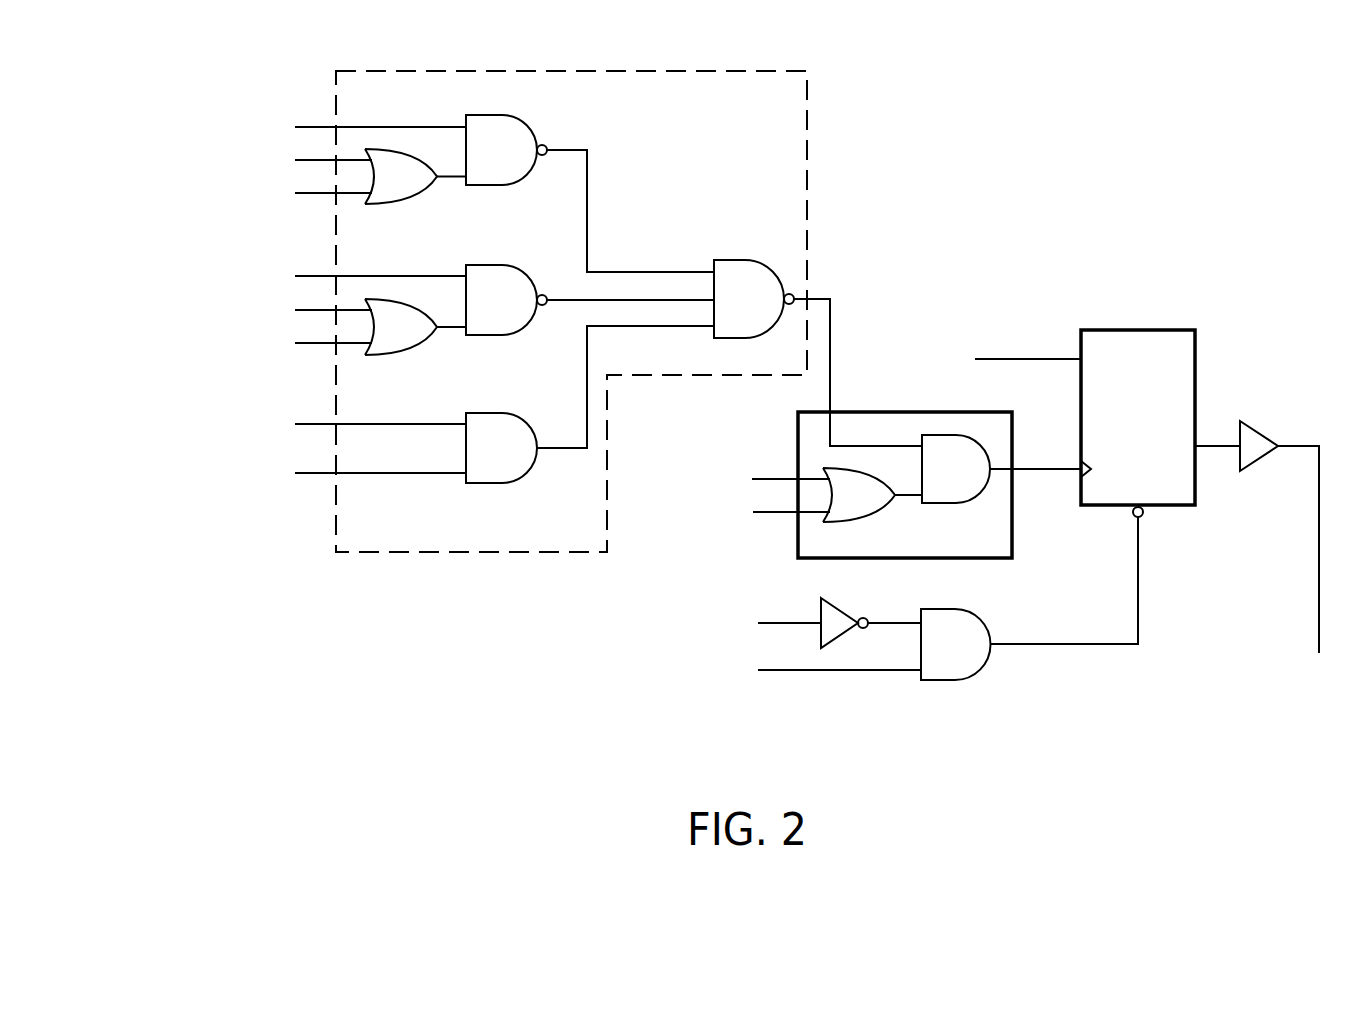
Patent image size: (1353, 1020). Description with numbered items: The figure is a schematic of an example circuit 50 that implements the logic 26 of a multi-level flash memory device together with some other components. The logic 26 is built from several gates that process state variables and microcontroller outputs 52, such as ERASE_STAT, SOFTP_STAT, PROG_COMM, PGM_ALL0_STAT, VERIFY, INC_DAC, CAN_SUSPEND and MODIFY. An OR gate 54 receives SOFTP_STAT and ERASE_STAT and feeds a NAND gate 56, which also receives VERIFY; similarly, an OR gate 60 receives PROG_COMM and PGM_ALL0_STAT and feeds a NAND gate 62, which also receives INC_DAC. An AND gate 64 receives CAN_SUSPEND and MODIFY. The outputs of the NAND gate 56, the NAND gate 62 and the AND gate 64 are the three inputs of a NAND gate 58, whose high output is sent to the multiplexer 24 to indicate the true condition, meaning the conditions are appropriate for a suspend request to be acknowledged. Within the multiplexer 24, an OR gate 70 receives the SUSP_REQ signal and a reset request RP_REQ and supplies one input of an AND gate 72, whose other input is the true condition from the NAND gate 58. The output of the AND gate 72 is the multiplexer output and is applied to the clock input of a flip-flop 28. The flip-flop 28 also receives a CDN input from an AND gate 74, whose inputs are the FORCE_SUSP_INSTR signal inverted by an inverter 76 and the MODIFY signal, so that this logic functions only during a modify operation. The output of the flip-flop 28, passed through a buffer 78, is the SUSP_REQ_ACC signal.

The multiplexer 24 is at (853, 412).
The logic 26 is at (808, 112).
The flip-flop 28 is at (1137, 330).
The circuit 50 is at (1160, 104).
The state variables and microcontroller outputs 52 is at (215, 95).
The OR gate 54 is at (407, 195).
The NAND gate 56 is at (510, 127).
The 3-input NAND gate 58 is at (743, 265).
The OR gate 60 is at (403, 345).
The NAND gate 62 is at (493, 270).
The AND gate 64 is at (510, 417).
The OR gate 70 is at (867, 513).
The AND gate 72 is at (948, 497).
The AND gate 74 is at (943, 675).
The inverter 76 is at (833, 613).
The buffer 78 is at (1257, 435).